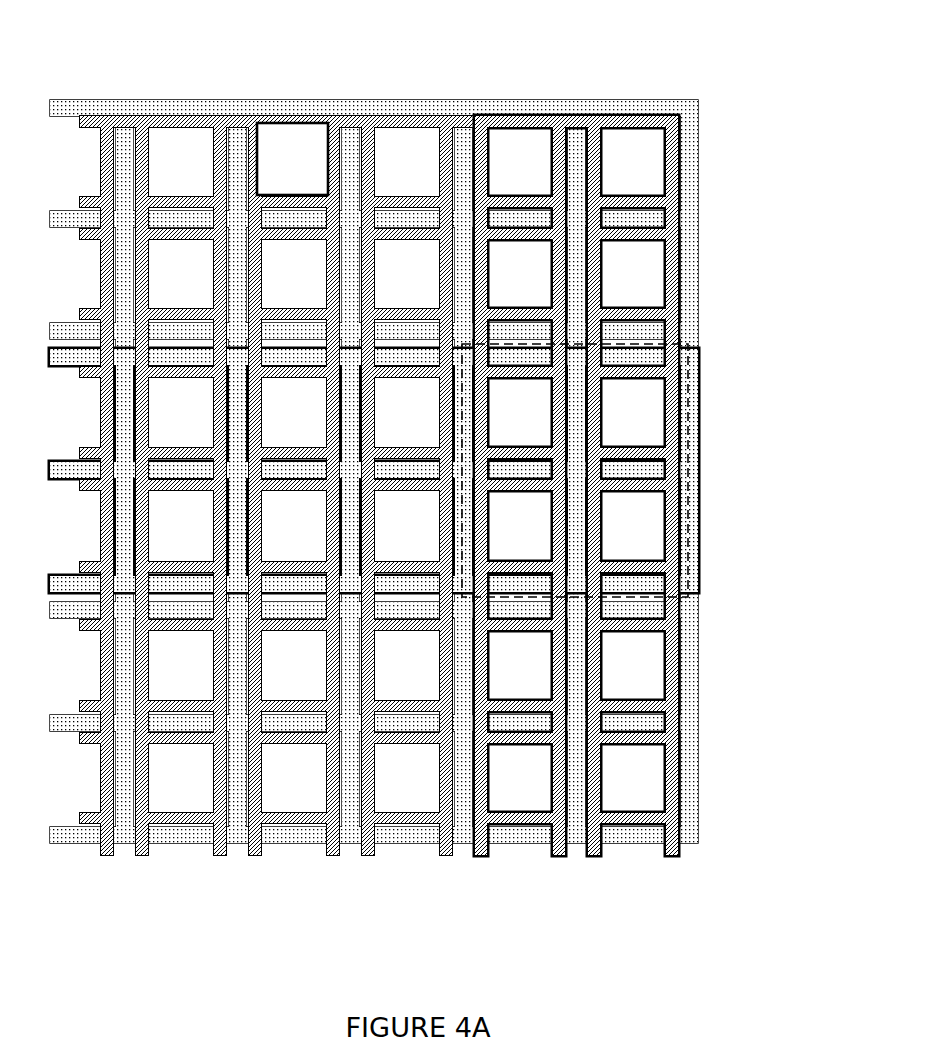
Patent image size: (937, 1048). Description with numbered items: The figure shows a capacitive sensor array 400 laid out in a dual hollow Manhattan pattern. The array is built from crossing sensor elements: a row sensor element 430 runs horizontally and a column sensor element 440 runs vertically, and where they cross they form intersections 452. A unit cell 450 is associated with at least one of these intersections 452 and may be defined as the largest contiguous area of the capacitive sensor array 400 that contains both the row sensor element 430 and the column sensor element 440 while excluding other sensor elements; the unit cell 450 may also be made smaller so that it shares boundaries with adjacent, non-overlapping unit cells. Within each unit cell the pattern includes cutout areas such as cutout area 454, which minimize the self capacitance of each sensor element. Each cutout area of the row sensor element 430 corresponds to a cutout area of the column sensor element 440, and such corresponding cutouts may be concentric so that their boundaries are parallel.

The capacitive sensor array 400 is at (437, 507).
The row sensor element 430 is at (698, 553).
The column sensor element 440 is at (593, 112).
The unit cell 450 is at (696, 427).
The intersections 452 is at (689, 389).
The cutout area 454 is at (299, 117).